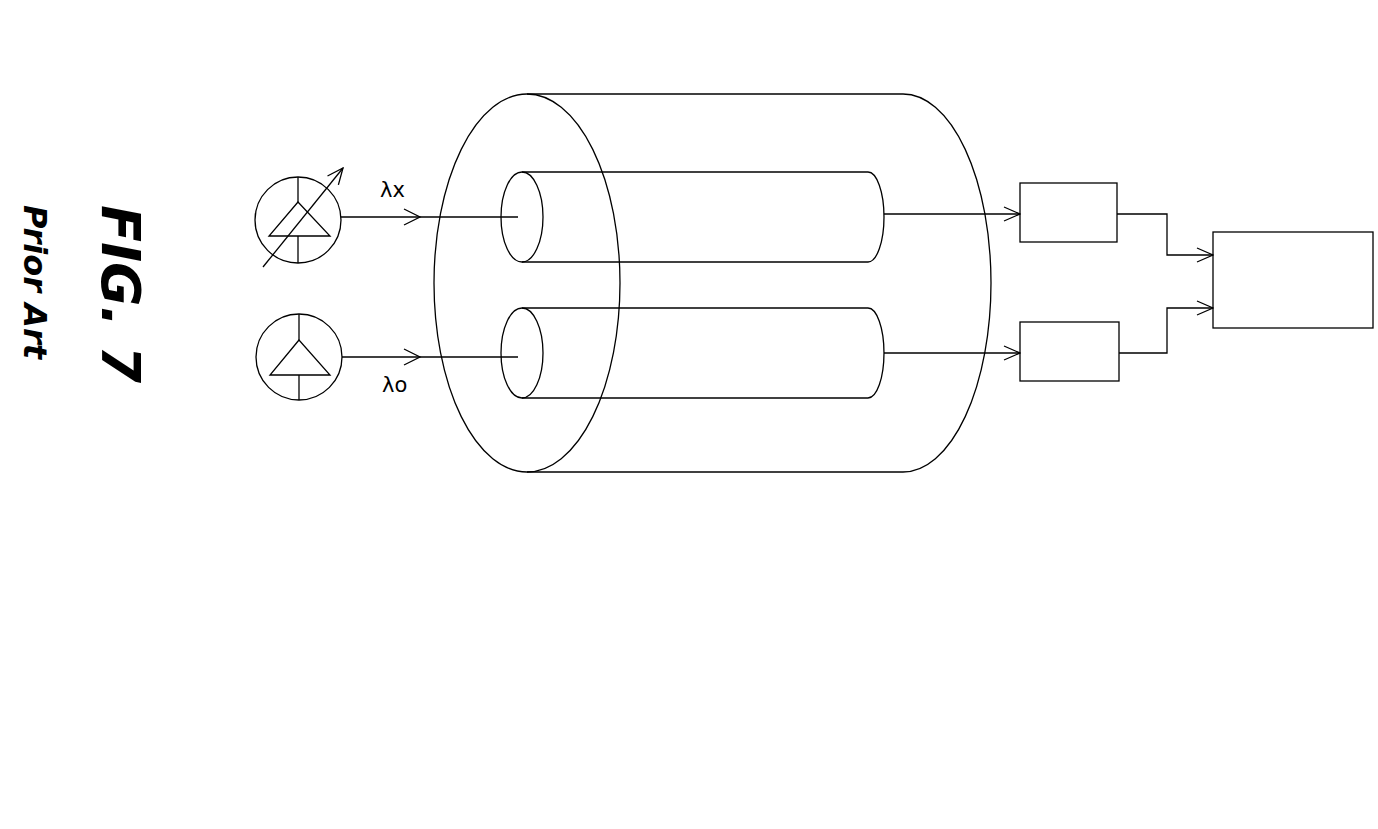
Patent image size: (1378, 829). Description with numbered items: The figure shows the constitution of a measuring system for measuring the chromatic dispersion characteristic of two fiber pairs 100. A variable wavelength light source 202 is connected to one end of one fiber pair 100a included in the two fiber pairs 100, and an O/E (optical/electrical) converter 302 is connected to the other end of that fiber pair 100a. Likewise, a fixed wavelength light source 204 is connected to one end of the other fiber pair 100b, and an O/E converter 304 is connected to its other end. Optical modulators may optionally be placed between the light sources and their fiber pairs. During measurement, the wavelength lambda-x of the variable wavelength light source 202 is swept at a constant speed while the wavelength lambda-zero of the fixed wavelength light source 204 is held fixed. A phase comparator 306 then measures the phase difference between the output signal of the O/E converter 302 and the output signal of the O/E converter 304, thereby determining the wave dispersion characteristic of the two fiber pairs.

The two fiber pairs 100 is at (942, 113).
The fiber pair 100a is at (882, 190).
The fiber pair 100b is at (883, 325).
The variable wavelength light source 202 is at (280, 177).
The fixed wavelength light source 204 is at (277, 393).
The O/E converter 302 is at (1064, 182).
The O/E converter 304 is at (1070, 382).
The phase comparator 306 is at (1278, 330).